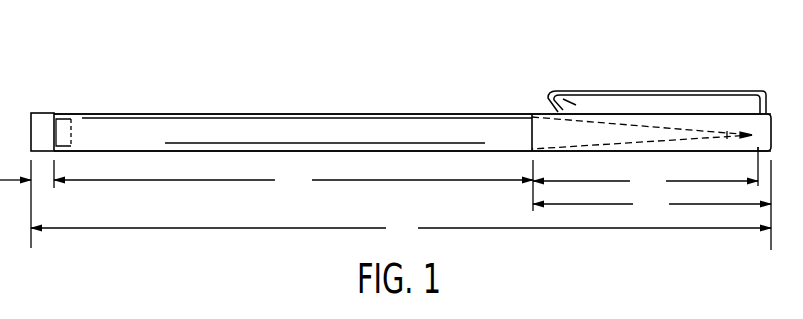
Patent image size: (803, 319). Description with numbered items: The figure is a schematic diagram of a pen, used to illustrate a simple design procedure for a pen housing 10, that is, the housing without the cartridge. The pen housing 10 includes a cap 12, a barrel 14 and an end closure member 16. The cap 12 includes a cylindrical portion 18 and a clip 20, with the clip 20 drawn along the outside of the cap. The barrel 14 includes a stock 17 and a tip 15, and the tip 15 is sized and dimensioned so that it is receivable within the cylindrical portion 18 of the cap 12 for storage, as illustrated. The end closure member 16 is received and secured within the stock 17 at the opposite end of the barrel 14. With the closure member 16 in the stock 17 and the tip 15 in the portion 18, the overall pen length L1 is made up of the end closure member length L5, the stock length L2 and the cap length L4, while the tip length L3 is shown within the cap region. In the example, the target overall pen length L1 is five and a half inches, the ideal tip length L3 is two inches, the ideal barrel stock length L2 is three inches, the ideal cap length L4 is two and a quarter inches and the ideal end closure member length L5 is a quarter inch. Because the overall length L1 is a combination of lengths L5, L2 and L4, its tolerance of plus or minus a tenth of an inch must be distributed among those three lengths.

The pen housing 10 is at (374, 60).
The cap 12 is at (725, 125).
The barrel 14 is at (301, 125).
The tip 15 is at (650, 132).
The end closure member 16 is at (42, 122).
The stock 17 is at (153, 124).
The cylindrical portion 18 is at (545, 129).
The clip 20 is at (663, 90).
The overall pen length L1 is at (401, 229).
The barrel stock length L2 is at (293, 181).
The tip length L3 is at (645, 179).
The cap length L4 is at (652, 205).
The end closure member length L5 is at (43, 180).